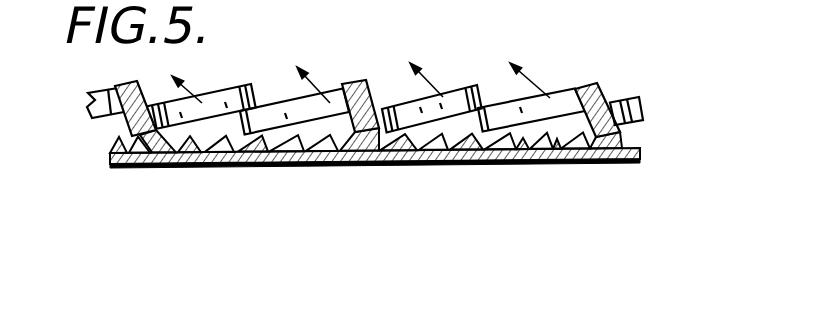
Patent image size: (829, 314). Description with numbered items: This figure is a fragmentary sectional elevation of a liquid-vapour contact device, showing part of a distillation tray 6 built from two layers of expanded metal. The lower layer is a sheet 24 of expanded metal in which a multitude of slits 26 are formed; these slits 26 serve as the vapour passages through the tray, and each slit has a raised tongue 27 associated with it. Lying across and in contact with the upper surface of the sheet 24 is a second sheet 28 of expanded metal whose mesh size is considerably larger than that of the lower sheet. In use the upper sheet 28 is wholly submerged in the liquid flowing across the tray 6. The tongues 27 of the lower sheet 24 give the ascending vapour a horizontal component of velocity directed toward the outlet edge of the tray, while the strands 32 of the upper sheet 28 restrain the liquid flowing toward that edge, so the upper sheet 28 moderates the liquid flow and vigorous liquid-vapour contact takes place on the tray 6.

The tray 6 is at (92, 163).
The sheet 24 is at (667, 163).
The slits 26 is at (264, 158).
The raised tongue 27 is at (192, 160).
The second sheet 28 is at (660, 108).
The strands 32 is at (360, 95).